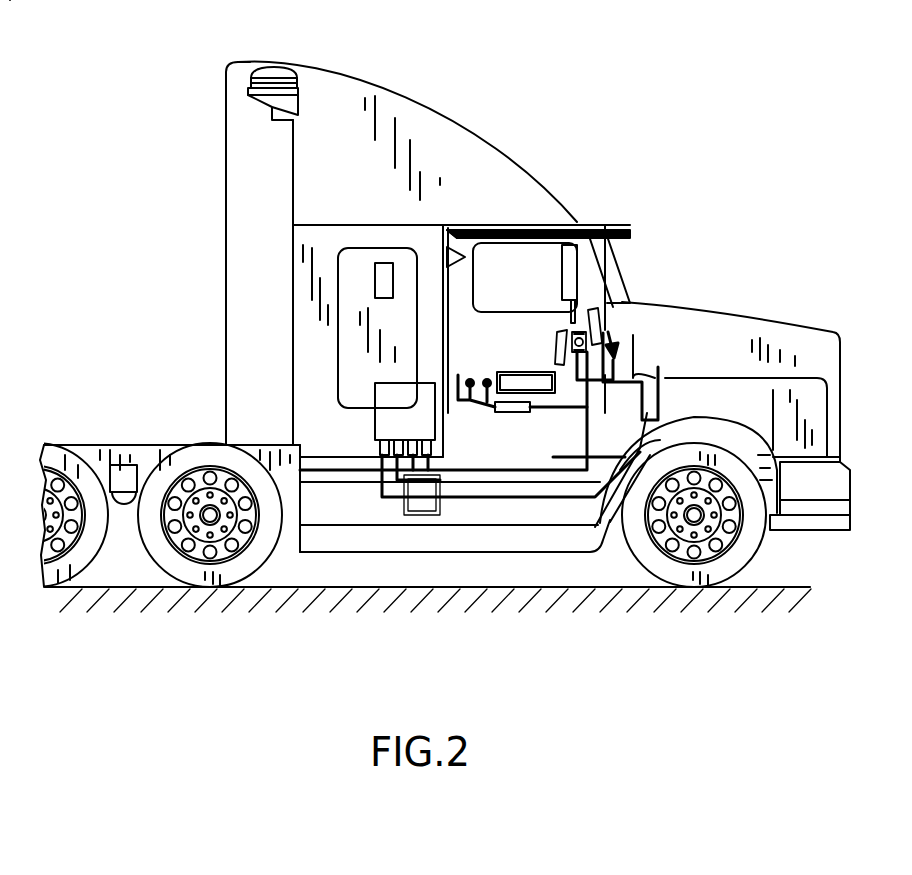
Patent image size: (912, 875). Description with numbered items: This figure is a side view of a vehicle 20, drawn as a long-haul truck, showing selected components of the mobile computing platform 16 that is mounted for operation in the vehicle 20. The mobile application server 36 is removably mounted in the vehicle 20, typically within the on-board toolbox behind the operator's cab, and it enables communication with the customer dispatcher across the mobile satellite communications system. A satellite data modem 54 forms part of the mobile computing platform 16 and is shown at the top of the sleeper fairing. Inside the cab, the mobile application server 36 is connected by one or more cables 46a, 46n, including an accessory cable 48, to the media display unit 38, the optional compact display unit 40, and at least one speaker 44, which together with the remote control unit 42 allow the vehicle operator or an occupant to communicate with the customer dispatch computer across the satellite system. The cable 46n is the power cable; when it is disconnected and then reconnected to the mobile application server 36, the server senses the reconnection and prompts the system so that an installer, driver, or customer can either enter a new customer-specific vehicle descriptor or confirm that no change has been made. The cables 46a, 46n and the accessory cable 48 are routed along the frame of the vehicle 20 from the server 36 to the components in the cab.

The mobile computing platform 16 is at (700, 157).
The vehicle 20 is at (470, 115).
The satellite data modem 54 is at (285, 65).
The cable 46a is at (293, 292).
The mobile application server 36 is at (376, 400).
The speaker 44 is at (470, 380).
The media display unit 38 is at (557, 338).
The remote control unit 42 is at (562, 330).
The compact display unit 40 is at (590, 302).
The accessory cable 48 is at (482, 482).
The power cable 46n is at (578, 482).